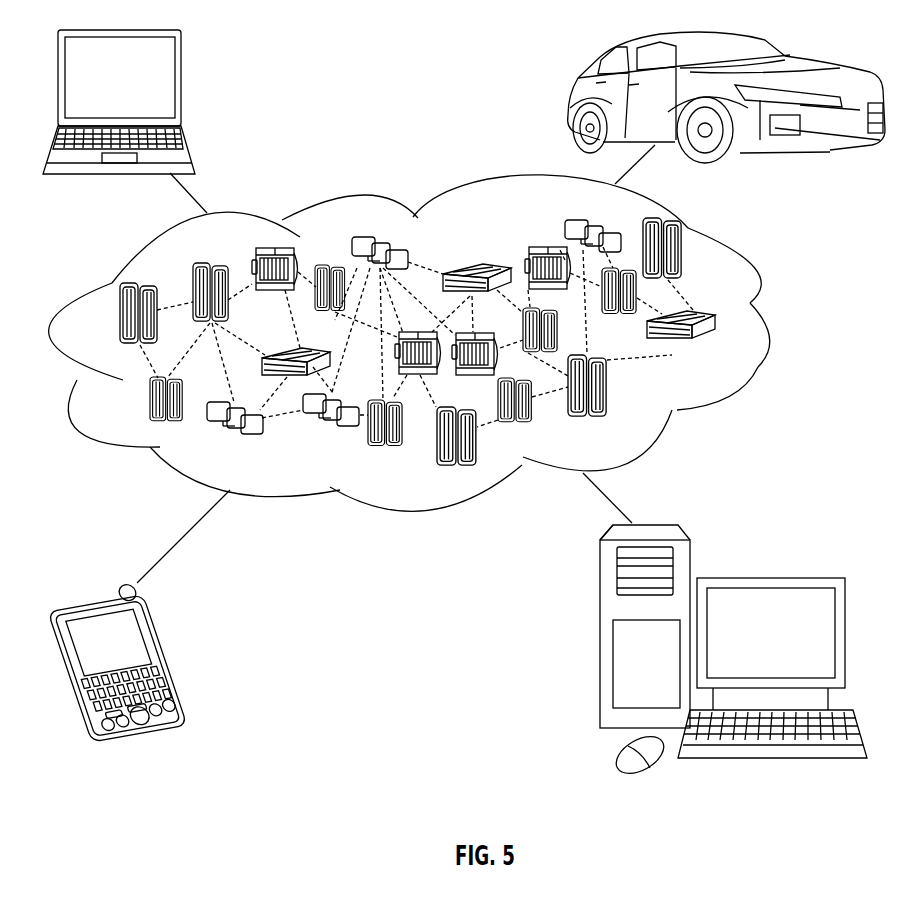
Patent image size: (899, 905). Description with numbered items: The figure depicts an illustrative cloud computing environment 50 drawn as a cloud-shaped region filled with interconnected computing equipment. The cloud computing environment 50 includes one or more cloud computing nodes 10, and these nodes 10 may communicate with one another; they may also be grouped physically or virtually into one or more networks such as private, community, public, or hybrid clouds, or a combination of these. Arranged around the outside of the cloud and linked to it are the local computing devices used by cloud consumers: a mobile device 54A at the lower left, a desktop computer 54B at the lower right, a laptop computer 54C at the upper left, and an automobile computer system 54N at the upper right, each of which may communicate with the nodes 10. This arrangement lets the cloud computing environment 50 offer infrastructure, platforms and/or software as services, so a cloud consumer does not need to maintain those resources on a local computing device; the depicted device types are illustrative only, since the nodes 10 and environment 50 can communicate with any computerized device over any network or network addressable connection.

The cloud computing node 10 is at (717, 350).
The cloud computing environment 50 is at (773, 323).
The mobile device 54A is at (170, 660).
The desktop computer 54B is at (770, 575).
The laptop computer 54C is at (180, 85).
The automobile computer system 54N is at (572, 98).